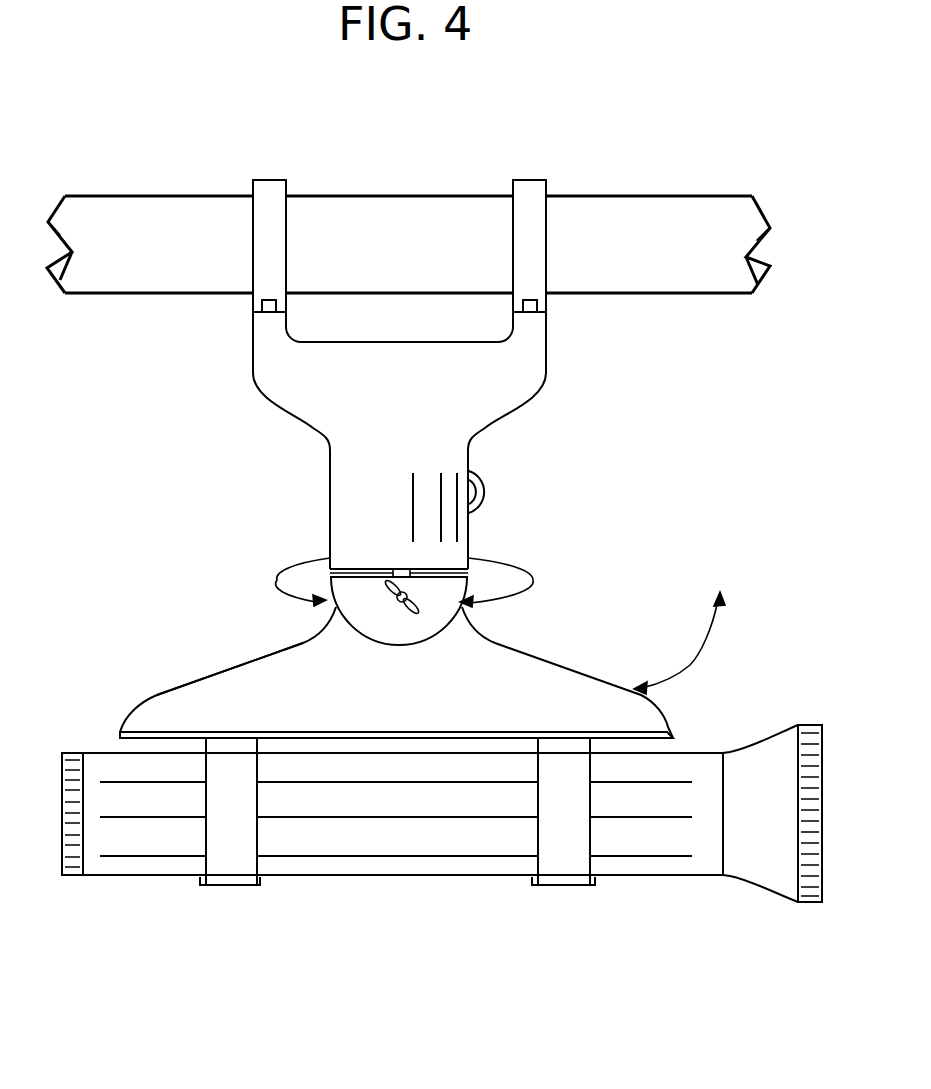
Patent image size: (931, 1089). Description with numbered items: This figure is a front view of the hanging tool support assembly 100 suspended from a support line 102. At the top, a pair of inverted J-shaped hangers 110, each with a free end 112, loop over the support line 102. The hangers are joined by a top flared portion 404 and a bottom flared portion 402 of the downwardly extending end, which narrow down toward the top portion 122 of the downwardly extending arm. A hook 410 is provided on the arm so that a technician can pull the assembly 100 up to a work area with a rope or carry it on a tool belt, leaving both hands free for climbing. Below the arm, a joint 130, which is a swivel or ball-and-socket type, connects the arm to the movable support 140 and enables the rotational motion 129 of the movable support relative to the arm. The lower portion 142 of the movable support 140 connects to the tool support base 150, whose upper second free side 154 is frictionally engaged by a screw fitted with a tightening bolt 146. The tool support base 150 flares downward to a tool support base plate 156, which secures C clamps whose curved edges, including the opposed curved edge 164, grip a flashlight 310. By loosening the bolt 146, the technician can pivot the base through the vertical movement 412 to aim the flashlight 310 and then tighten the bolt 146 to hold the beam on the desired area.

The hanging tool support assembly 100 is at (692, 429).
The support line 102 is at (583, 196).
The inverted J-shaped hangers 110 is at (268, 180).
The free end 112 is at (547, 303).
The top portion of downwardly extending arm 122 is at (330, 500).
The rotational motion 129 is at (307, 558).
The joint 130 is at (400, 569).
The movable support 140 is at (462, 606).
The lower portion of movable support 142 is at (428, 628).
The tightening bolt 146 is at (398, 603).
The tool support base 150 is at (552, 663).
The upper second free side 154 is at (150, 705).
The tool support base plate 156 is at (122, 736).
The opposed curved edge 164 is at (200, 884).
The flashlight 310 is at (743, 743).
The bottom flared portion 402 is at (545, 385).
The top flared portion 404 is at (393, 342).
The hook 410 is at (478, 472).
The vertical movement 412 is at (700, 643).